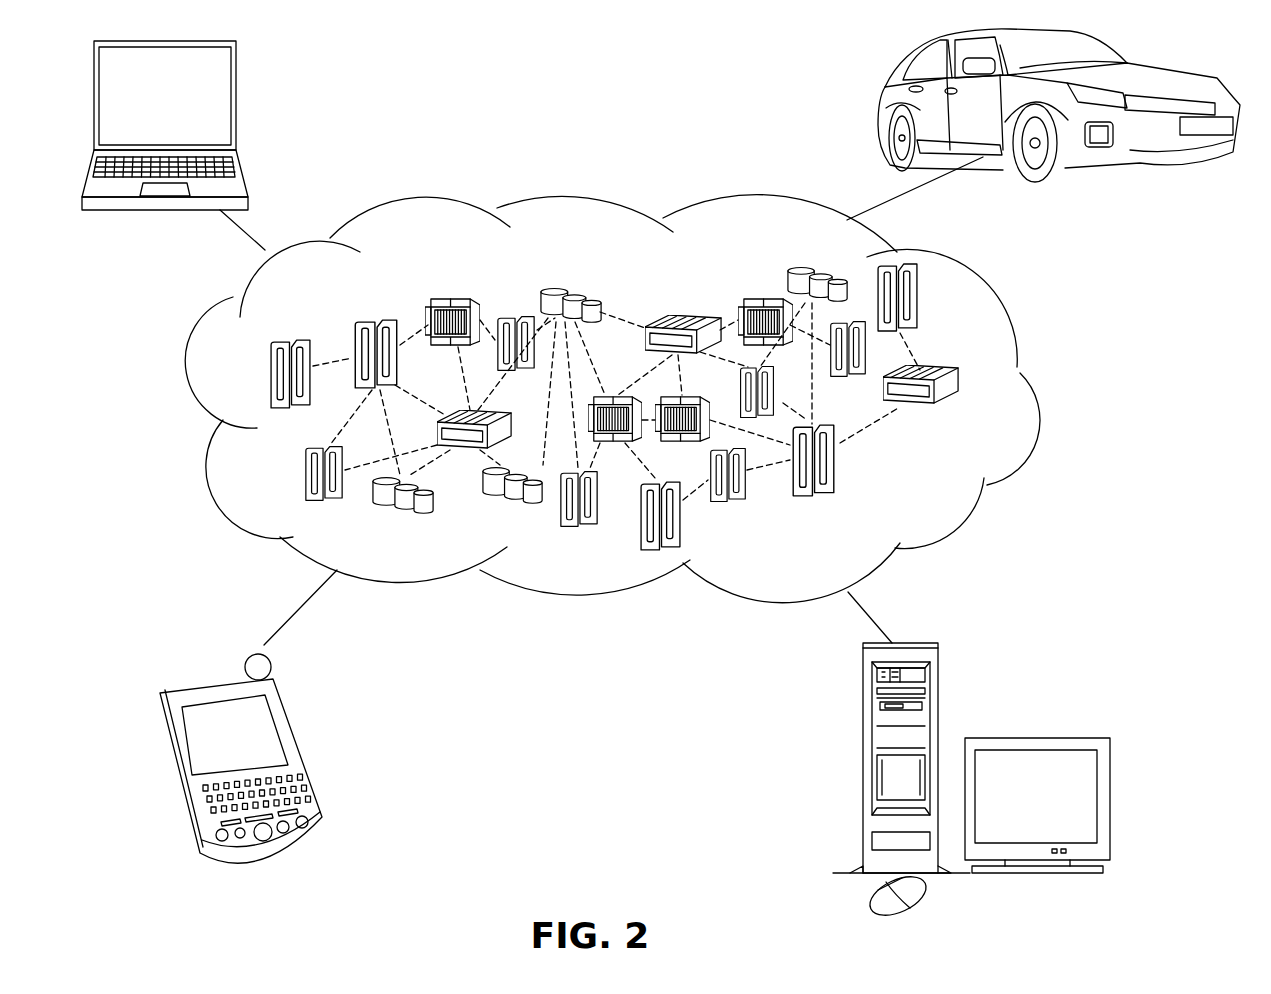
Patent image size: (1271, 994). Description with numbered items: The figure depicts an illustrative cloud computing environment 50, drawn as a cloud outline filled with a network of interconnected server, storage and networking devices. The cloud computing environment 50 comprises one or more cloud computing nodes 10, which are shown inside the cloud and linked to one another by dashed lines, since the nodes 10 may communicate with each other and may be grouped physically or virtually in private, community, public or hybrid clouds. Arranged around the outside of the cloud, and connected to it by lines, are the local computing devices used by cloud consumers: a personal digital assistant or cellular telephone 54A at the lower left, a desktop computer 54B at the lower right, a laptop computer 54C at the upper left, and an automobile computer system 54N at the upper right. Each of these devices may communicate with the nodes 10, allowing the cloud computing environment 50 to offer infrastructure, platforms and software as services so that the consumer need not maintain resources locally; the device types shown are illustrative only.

The cloud computing node 10 is at (941, 489).
The cloud computing environment 50 is at (1032, 388).
The personal digital assistant or cellular telephone 54A is at (290, 718).
The desktop computer 54B is at (862, 702).
The laptop computer 54C is at (235, 78).
The automobile computer system 54N is at (880, 97).